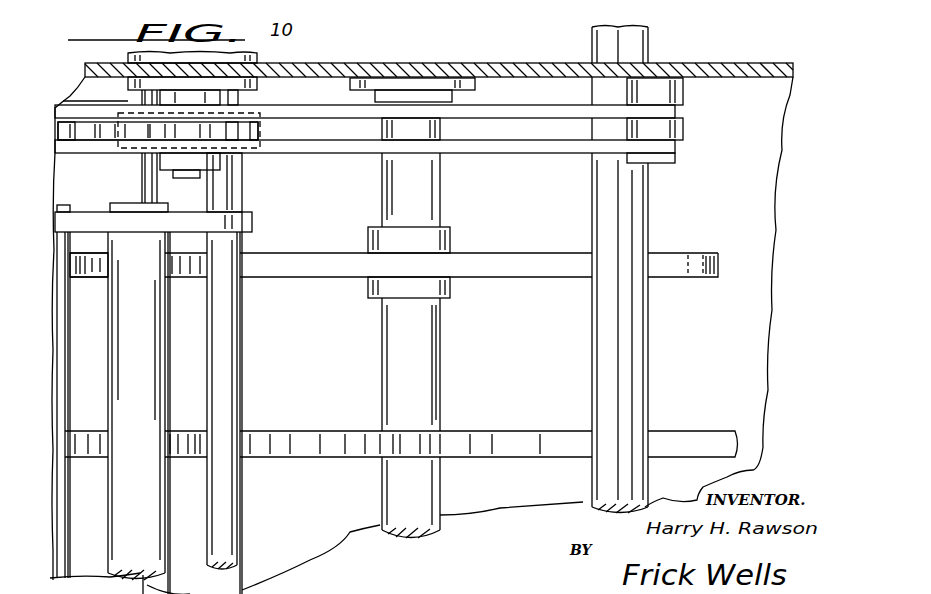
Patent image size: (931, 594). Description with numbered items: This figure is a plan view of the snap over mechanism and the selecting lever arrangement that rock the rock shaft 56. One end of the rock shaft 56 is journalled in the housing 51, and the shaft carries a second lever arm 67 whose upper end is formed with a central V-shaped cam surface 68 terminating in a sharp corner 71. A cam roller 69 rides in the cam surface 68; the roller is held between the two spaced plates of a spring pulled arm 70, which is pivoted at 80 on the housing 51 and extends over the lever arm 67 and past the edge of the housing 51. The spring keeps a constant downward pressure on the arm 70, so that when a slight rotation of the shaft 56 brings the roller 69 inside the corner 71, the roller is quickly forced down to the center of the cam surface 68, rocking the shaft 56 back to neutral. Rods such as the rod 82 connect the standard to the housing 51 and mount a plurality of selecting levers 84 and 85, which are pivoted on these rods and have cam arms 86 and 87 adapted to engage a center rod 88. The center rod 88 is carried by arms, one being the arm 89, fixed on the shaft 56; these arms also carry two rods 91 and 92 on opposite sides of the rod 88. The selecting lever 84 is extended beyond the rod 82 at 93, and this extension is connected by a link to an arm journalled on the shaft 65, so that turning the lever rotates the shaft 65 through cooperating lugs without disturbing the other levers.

The housing 51 is at (752, 63).
The pivot 80 is at (657, 163).
The V-shaped cam surface 68 is at (148, 130).
The cam roller 69 is at (228, 122).
The sharp corner 71 is at (75, 130).
The second lever arm 67 is at (258, 130).
The spring pulled arm 70 is at (347, 115).
The arm 89 is at (252, 224).
The cam arm 86 is at (95, 272).
The selecting lever 84 is at (317, 268).
The center rod 88 is at (118, 343).
The rock shaft 56 is at (190, 368).
The rod 82 is at (388, 352).
The extension of selecting lever 93 is at (531, 265).
The shaft 65 is at (598, 348).
The rod 91 is at (62, 405).
The rod 92 is at (223, 398).
The cam arm 87 is at (200, 452).
The selecting lever 85 is at (333, 450).